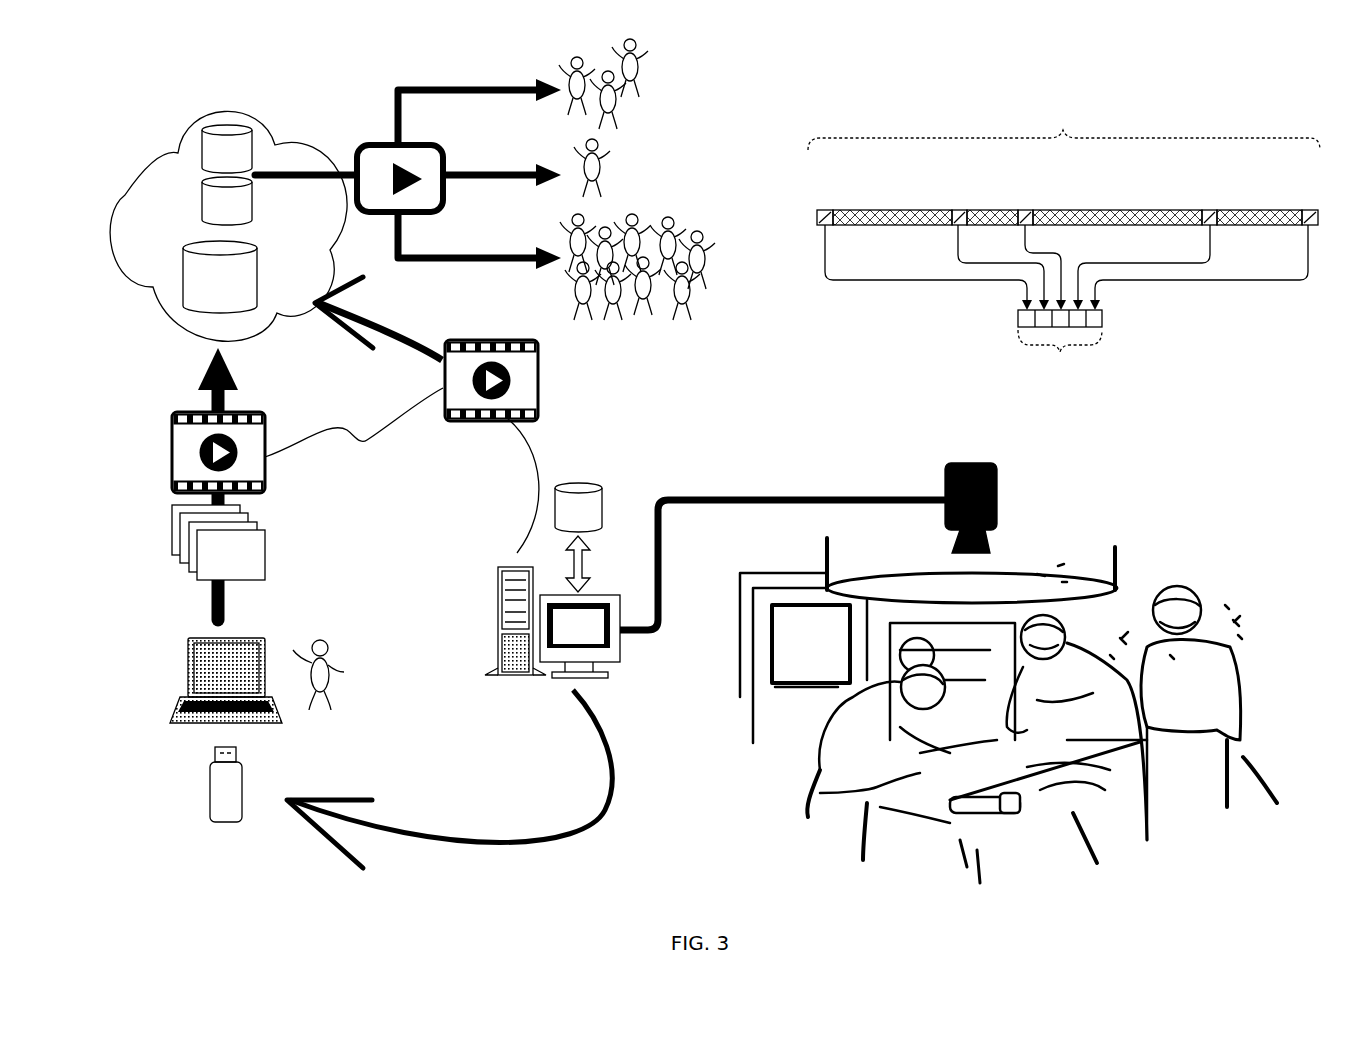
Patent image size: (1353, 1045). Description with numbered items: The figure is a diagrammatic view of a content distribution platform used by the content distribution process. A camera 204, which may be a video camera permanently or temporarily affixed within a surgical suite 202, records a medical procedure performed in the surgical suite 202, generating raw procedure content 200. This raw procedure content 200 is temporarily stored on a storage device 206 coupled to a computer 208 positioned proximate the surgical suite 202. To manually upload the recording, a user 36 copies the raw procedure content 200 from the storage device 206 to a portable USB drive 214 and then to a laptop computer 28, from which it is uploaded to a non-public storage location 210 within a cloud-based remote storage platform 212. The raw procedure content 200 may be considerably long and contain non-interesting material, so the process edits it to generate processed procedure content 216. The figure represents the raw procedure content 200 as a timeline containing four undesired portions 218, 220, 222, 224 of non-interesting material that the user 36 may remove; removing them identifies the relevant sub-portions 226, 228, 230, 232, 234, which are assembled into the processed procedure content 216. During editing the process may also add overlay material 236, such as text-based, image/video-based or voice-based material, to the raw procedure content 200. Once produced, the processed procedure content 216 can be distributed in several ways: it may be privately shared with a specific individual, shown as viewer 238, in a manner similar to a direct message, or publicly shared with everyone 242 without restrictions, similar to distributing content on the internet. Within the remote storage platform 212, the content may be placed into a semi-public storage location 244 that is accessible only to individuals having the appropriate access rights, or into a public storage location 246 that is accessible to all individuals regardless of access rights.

The raw procedure content 200 is at (792, 282).
The surgical suite 202 is at (1110, 515).
The camera 204 is at (998, 480).
The storage device 206 is at (578, 507).
The computer 208 is at (498, 616).
The non-public storage location 210 is at (220, 277).
The remote storage platform 212 is at (125, 186).
The USB drive 214 is at (210, 784).
The processed procedure content 216 is at (357, 160).
The undesired portion 218 is at (884, 210).
The undesired portion 220 is at (992, 210).
The undesired portion 222 is at (1100, 210).
The undesired portion 224 is at (1262, 210).
The sub-portion 226 is at (821, 210).
The sub-portion 228 is at (960, 210).
The sub-portion 230 is at (1023, 210).
The sub-portion 232 is at (1206, 210).
The sub-portion 234 is at (1304, 210).
The overlay material 236 is at (218, 542).
The viewer 238 is at (558, 156).
The everyone 242 is at (558, 63).
The semi-public storage location 244 is at (227, 149).
The public storage location 246 is at (227, 201).
The laptop computer 28 is at (188, 654).
The user 36 is at (341, 656).